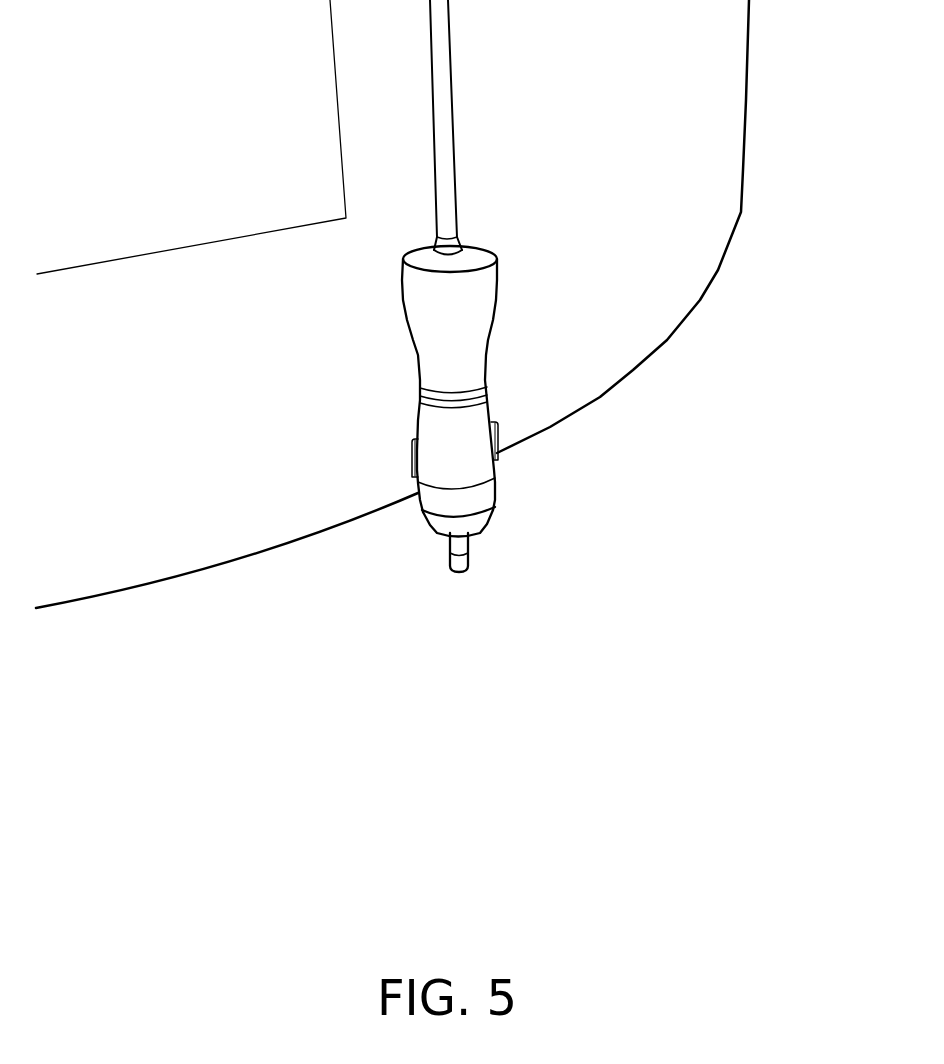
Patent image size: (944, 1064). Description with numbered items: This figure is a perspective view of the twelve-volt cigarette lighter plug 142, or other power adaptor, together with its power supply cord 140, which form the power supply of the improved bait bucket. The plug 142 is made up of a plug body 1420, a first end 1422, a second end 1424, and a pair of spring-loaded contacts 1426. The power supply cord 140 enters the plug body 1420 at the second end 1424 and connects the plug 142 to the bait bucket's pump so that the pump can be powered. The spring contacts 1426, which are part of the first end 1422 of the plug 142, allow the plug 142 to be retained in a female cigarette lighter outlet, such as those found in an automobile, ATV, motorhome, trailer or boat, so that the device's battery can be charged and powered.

The power supply cord 140 is at (447, 192).
The cigarette lighter plug 142 is at (541, 335).
The plug body 1420 is at (423, 325).
The first end 1422 is at (487, 527).
The second end 1424 is at (508, 243).
The spring-loaded contacts 1426 is at (493, 437).